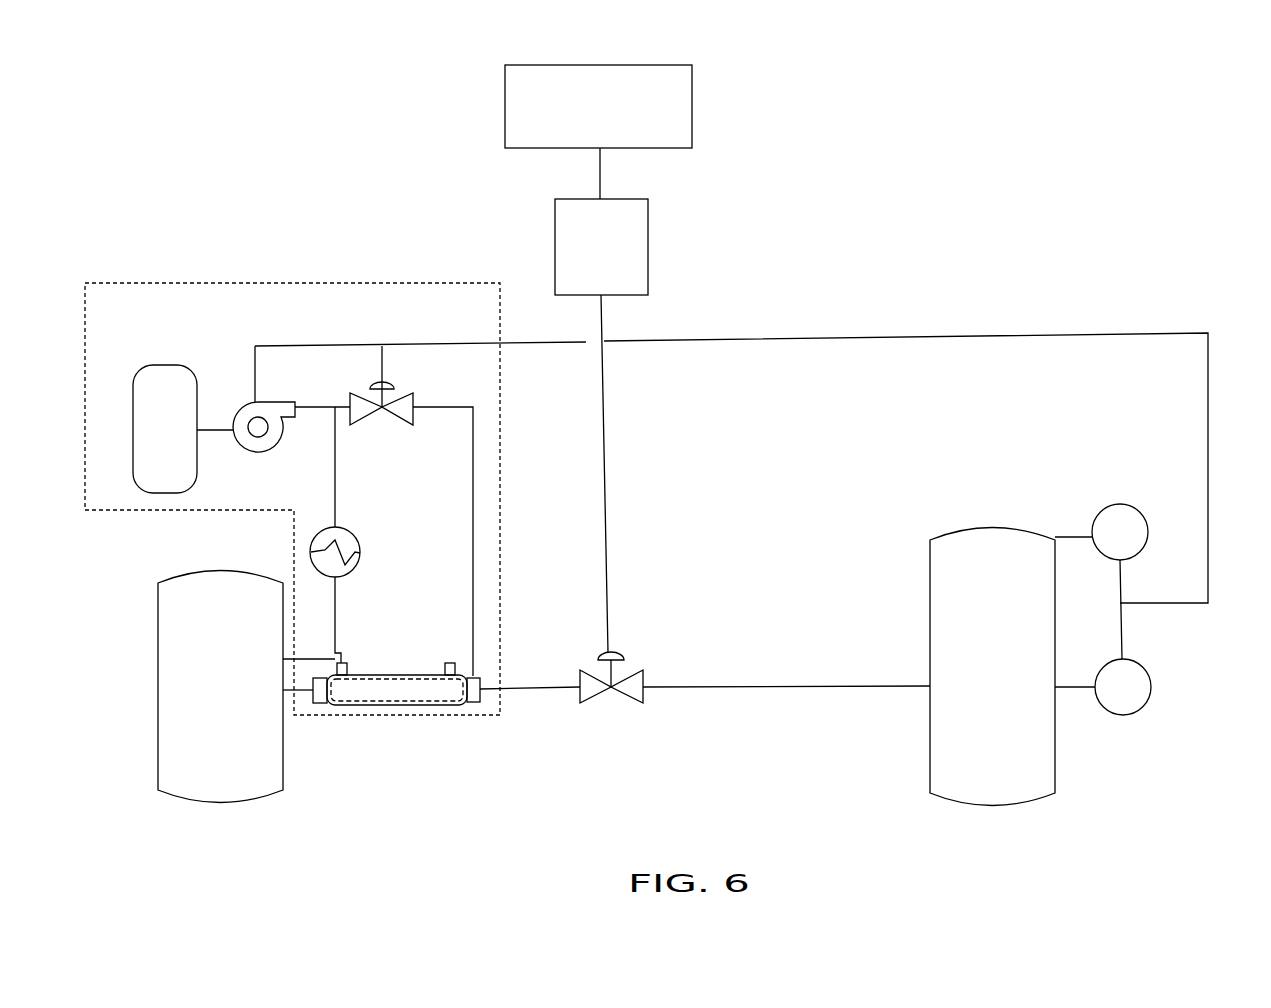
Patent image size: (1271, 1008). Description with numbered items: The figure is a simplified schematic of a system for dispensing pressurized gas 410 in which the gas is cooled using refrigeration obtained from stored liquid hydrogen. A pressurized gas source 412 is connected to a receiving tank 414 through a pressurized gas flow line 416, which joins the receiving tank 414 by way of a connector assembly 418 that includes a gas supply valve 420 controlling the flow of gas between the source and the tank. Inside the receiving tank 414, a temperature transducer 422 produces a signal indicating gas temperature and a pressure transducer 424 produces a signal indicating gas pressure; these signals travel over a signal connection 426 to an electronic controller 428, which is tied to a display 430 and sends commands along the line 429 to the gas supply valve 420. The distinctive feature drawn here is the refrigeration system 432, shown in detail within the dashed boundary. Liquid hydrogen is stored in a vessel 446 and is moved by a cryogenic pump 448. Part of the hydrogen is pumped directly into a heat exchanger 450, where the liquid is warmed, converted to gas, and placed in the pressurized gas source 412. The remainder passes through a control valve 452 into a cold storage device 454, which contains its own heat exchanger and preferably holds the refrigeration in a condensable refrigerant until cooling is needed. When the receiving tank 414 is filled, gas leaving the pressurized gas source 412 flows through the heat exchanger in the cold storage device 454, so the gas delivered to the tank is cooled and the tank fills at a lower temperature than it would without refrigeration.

The system for dispensing pressurized gas 410 is at (893, 207).
The pressurized gas source 412 is at (200, 806).
The receiving tank 414 is at (1057, 765).
The pressurized gas flow line 416 is at (548, 690).
The connector assembly 418 is at (808, 686).
The gas supply valve 420 is at (609, 692).
The temperature transducer 422 is at (1145, 705).
The pressure transducer 424 is at (1117, 504).
The signal connection 426 is at (972, 333).
The electronic controller 428 is at (648, 245).
The control signal line 429 is at (605, 432).
The display 430 is at (505, 109).
The refrigeration system 432 is at (145, 283).
The vessel 446 is at (133, 380).
The cryogenic pump 448 is at (240, 406).
The heat exchanger 450 is at (358, 562).
The control valve 452 is at (365, 422).
The cold storage device 454 is at (360, 708).